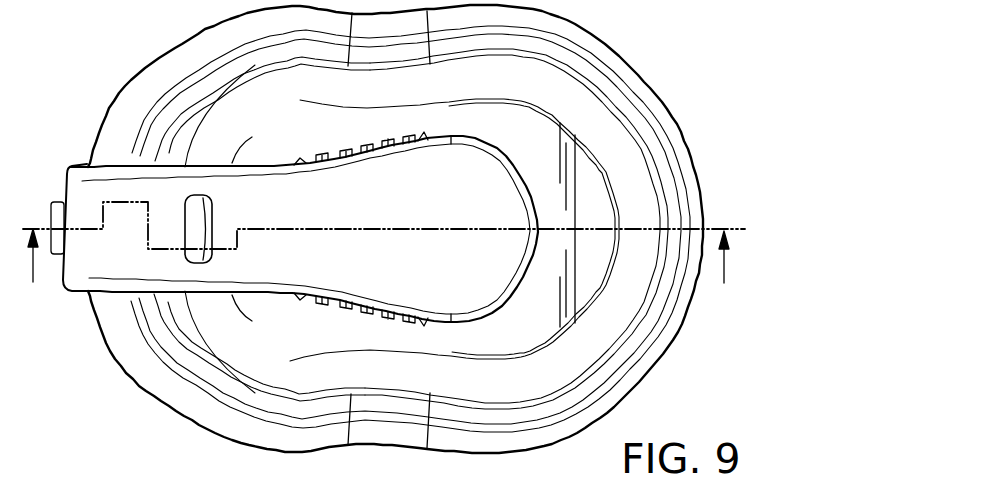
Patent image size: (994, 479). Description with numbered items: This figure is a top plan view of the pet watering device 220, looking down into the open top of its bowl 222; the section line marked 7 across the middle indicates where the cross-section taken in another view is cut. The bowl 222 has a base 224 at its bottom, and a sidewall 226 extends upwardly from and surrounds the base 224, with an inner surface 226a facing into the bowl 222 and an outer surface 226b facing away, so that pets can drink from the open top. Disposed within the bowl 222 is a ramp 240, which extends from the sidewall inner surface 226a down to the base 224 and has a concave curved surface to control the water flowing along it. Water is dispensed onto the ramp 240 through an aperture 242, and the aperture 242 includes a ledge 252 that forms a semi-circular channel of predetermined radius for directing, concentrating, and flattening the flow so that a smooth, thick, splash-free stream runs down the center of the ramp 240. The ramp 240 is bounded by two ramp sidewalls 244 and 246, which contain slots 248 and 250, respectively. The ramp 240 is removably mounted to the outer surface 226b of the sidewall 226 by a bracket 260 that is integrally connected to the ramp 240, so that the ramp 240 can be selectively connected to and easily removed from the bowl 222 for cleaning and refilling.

The pet watering device 220 is at (377, 238).
The bowl 222 is at (588, 40).
The base 224 is at (543, 337).
The sidewall 226 is at (661, 347).
The inner surface 226a is at (562, 388).
The outer surface 226b is at (168, 416).
The ramp 240 is at (462, 210).
The aperture 242 is at (205, 214).
The ramp sidewall 244 is at (233, 300).
The ramp sidewall 246 is at (265, 163).
The slots 248 is at (392, 317).
The slots 250 is at (364, 151).
The ledge 252 is at (232, 243).
The bracket 260 is at (64, 193).
The section line 7- 7 is at (382, 279).